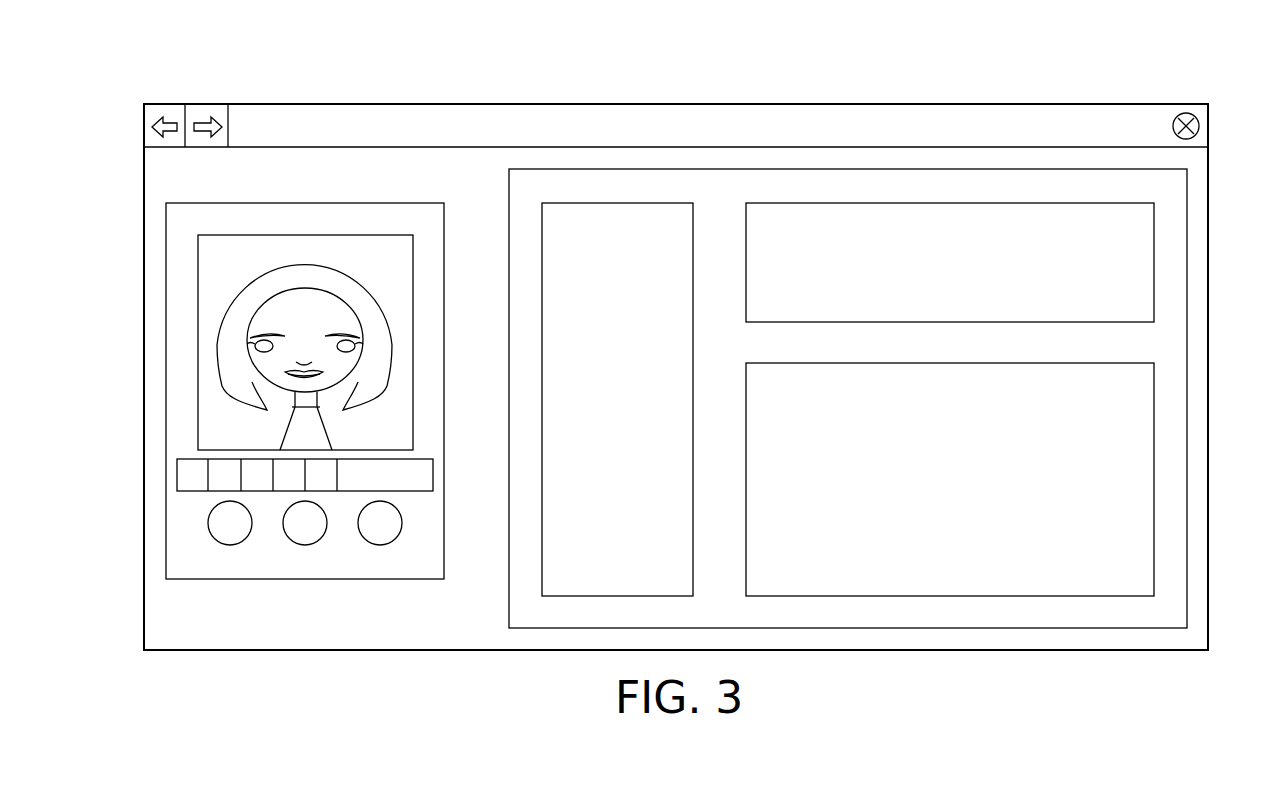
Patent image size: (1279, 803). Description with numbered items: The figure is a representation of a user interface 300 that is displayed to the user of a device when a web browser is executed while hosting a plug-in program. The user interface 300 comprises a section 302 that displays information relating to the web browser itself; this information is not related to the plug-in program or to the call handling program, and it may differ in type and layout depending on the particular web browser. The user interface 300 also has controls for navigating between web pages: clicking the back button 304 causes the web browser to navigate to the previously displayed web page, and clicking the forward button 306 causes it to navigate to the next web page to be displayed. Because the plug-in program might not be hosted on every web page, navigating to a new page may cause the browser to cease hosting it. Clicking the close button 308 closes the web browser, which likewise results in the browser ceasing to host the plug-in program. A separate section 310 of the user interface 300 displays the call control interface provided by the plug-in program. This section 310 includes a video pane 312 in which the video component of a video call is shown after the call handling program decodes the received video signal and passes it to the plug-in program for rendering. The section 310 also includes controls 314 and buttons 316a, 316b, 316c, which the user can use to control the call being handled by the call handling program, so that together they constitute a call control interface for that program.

The user interface 300 is at (112, 82).
The section 302 is at (1188, 183).
The back button 304 is at (167, 120).
The forward button 306 is at (206, 120).
The close button 308 is at (1183, 113).
The section 310 is at (166, 216).
The video pane 312 is at (198, 340).
The controls 314 is at (177, 470).
The button 316a is at (227, 545).
The button 316b is at (302, 545).
The button 316c is at (377, 545).